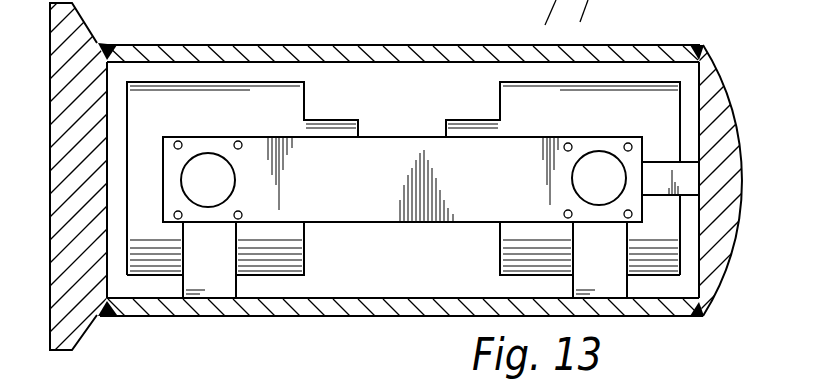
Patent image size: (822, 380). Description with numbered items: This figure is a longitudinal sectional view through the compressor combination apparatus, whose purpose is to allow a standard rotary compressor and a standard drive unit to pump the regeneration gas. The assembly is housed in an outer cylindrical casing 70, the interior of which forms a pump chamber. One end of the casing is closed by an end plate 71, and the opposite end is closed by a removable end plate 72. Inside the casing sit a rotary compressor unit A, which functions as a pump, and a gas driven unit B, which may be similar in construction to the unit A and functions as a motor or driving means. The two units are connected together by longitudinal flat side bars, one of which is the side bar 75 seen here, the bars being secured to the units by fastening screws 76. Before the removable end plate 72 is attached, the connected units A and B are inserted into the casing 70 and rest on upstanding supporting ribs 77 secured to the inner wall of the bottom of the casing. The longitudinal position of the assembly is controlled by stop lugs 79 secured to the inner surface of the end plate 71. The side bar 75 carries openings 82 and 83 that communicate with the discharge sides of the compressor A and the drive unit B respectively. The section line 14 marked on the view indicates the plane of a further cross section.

The outer cylindrical casing 70 is at (401, 211).
The end plate 71 is at (726, 138).
The removable end plate 72 is at (55, 140).
The side bar 75 is at (426, 208).
The fastening screws 76 is at (240, 141).
The supporting ribs 77 is at (213, 286).
The stop lugs 79 is at (661, 172).
The opening 82 is at (600, 157).
The opening 83 is at (198, 160).
The section line 14- 14 is at (341, 0).
The rotary compressor unit A is at (499, 100).
The gas driven unit B is at (305, 99).